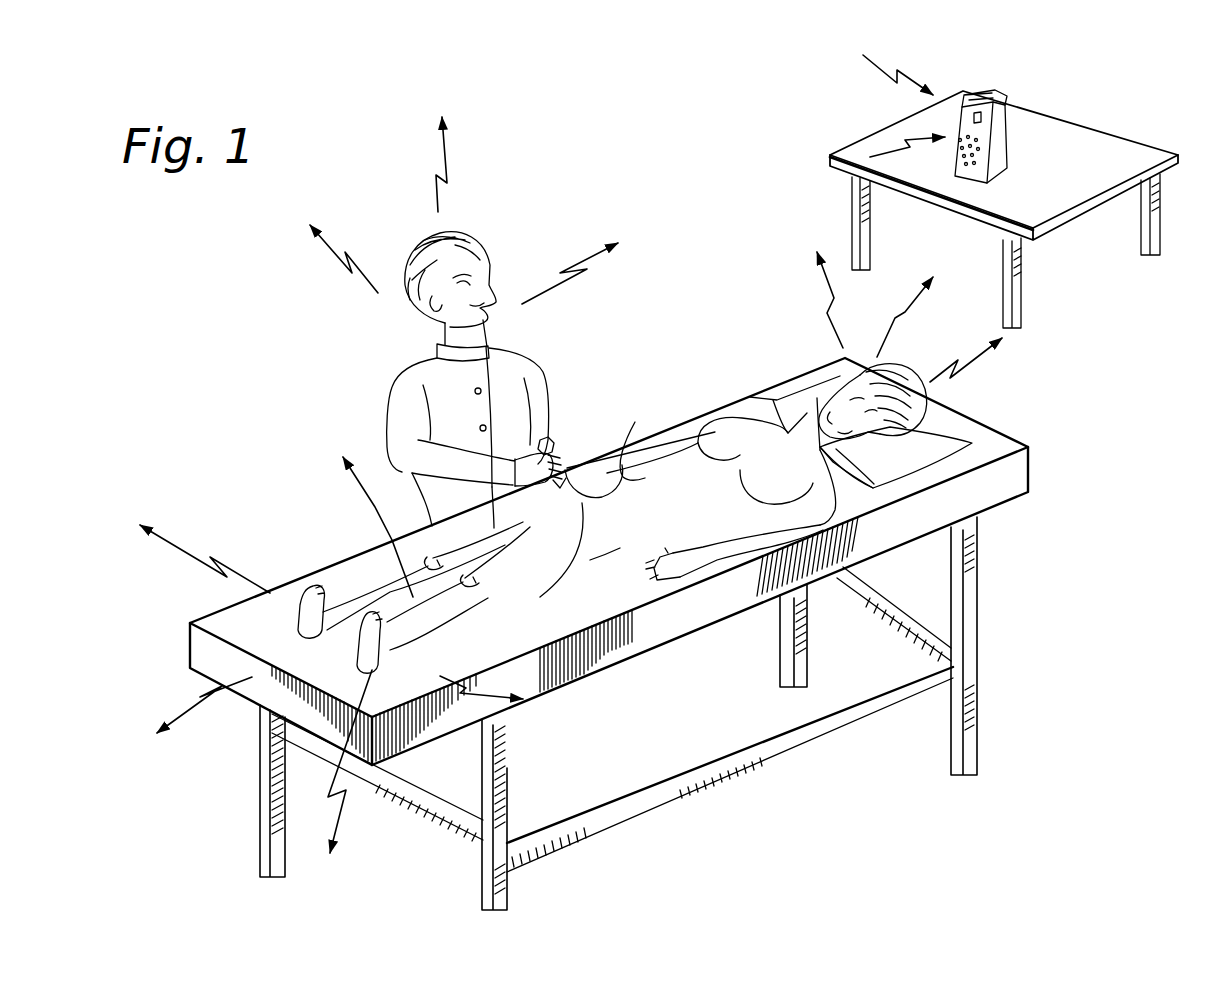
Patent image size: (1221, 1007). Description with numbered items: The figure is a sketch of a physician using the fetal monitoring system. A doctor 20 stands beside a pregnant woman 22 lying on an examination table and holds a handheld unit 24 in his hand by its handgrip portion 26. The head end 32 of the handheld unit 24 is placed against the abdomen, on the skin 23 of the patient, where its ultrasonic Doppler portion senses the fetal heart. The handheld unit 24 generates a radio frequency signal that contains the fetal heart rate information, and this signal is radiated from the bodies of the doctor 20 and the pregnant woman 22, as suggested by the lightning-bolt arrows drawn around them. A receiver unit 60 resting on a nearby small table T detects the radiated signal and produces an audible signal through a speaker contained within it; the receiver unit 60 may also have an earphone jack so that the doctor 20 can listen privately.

The doctor 20 is at (488, 247).
The pregnant woman 22 is at (748, 423).
The skin 23 is at (561, 566).
The handheld unit 24 is at (543, 440).
The handgrip portion 26 is at (563, 470).
The head end 32 is at (649, 434).
The receiver unit 60 is at (1012, 128).
The table T is at (1127, 148).